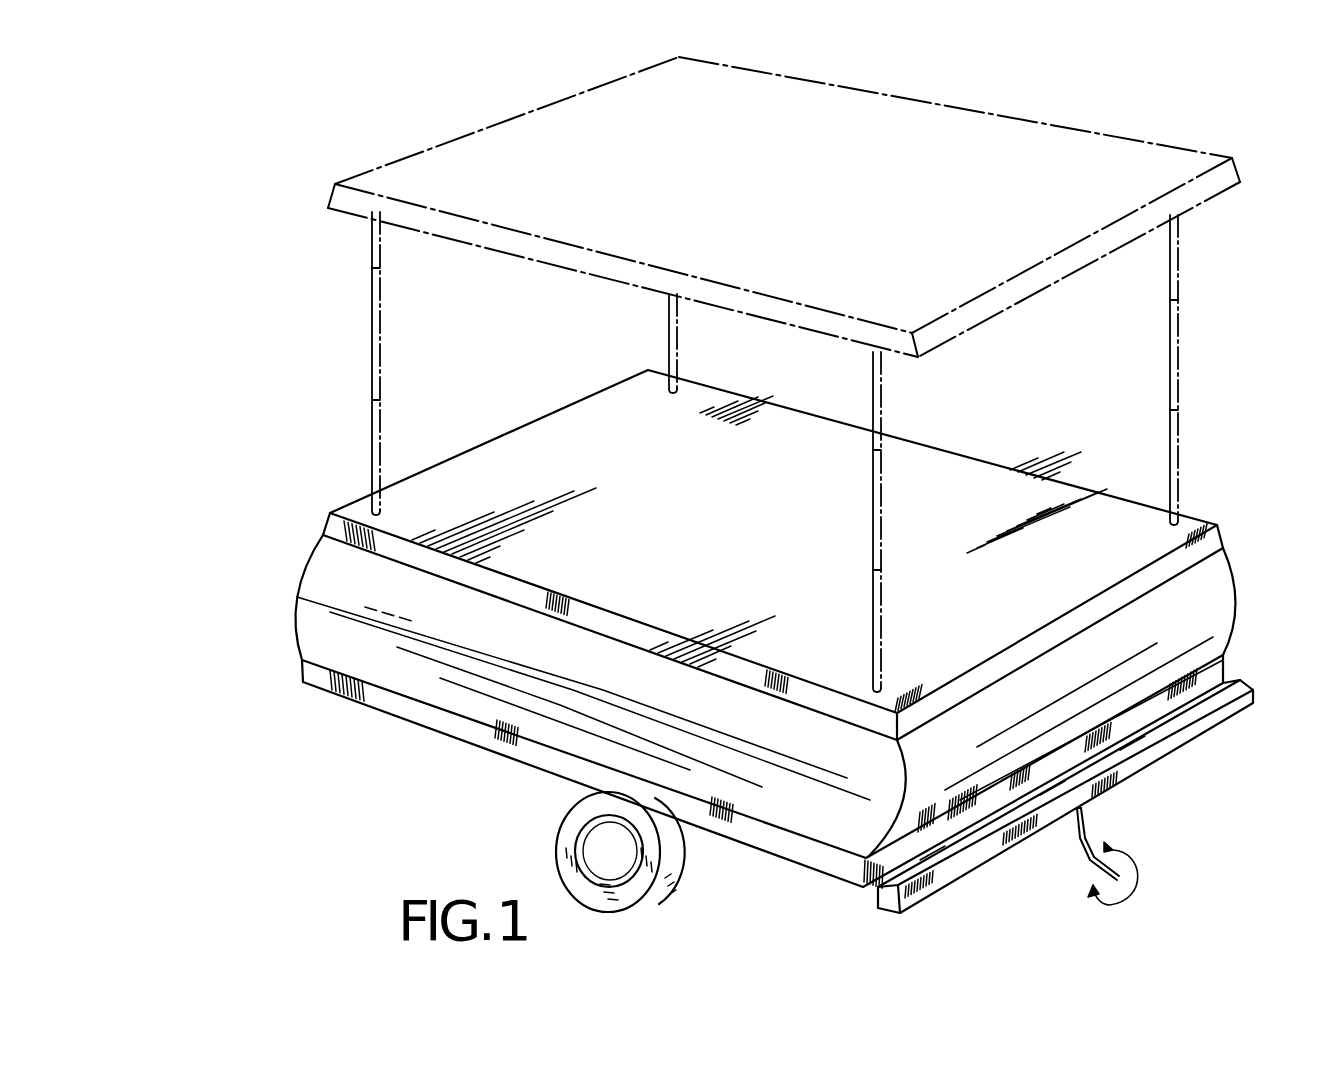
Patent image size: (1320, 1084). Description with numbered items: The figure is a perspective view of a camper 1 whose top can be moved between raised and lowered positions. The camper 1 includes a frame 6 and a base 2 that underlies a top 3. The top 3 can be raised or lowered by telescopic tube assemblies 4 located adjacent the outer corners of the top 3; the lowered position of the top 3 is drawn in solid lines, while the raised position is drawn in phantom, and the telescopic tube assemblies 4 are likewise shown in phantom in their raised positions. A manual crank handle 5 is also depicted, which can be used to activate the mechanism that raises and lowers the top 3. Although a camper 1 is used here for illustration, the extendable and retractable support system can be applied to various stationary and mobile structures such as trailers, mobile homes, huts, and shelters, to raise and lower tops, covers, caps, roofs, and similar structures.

The camper 1 is at (248, 642).
The base 2 is at (480, 707).
The top 3 is at (1007, 143).
The telescopic tube assemblies 4 is at (345, 216).
The manual crank handle 5 is at (1093, 820).
The frame 6 is at (722, 838).